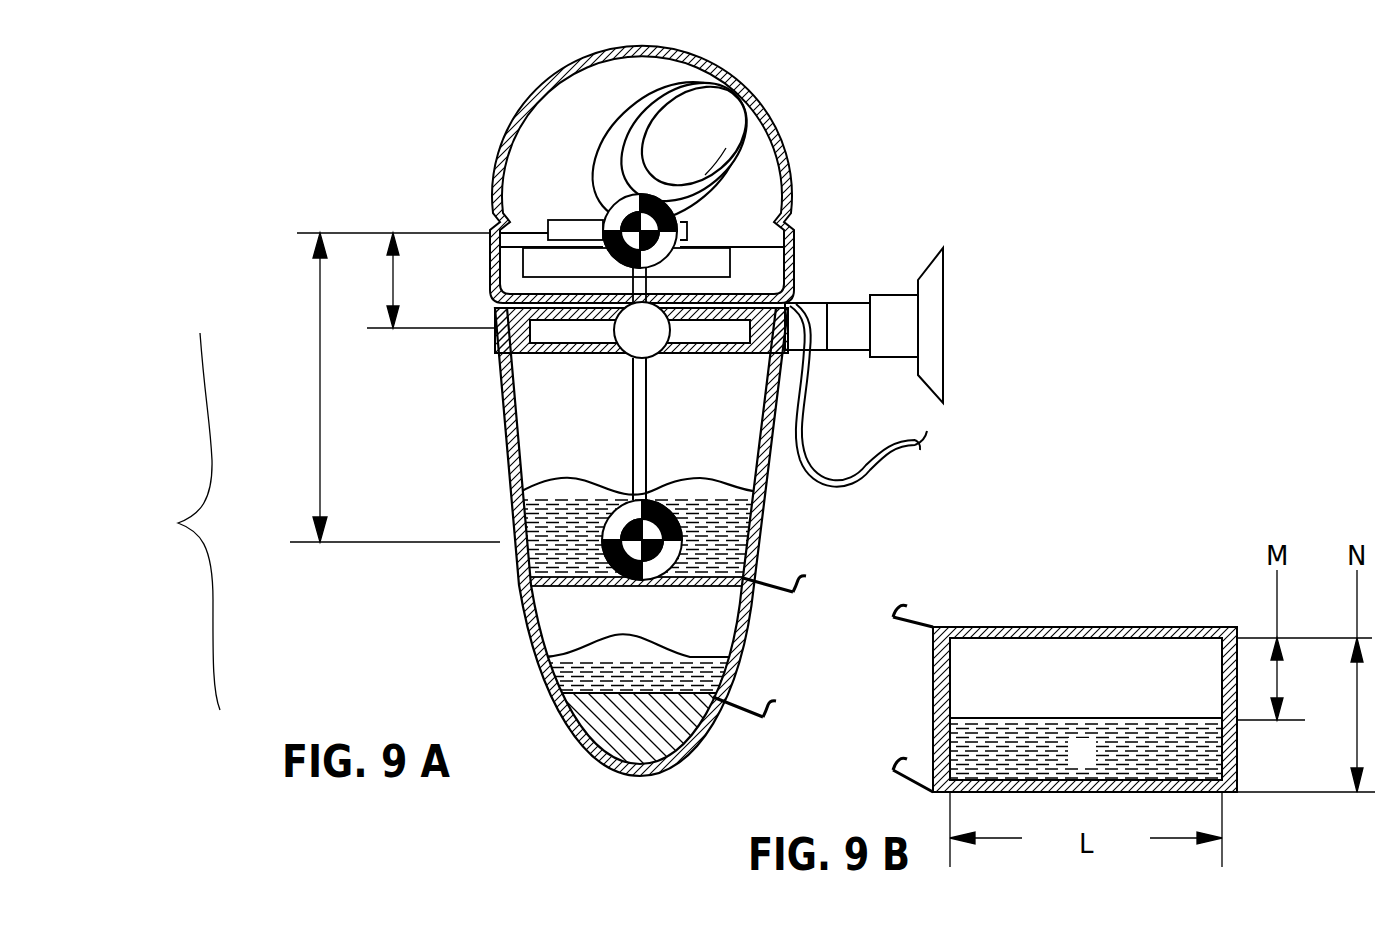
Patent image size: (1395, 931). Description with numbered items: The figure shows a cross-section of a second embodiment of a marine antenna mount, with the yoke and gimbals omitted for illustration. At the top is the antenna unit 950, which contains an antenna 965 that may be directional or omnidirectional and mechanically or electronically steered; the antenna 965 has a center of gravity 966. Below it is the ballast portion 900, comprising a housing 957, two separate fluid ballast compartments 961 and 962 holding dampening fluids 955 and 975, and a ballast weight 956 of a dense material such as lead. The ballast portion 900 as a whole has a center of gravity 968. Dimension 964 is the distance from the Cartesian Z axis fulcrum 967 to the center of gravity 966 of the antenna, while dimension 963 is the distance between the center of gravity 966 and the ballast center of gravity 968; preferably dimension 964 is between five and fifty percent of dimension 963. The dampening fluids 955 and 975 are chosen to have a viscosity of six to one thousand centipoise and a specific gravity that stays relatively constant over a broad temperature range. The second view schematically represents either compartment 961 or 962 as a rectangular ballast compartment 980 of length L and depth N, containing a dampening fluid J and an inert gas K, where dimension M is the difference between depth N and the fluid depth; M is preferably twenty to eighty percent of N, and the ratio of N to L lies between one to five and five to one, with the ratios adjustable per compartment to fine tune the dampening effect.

In FIG. 9A, the ballast portion 900 is at (170, 521).
In FIG. 9A, the antenna unit 950 is at (523, 92).
In FIG. 9A, the dampening fluid 955 is at (543, 503).
In FIG. 9A, the ballast weight 956 is at (668, 733).
In FIG. 9A, the housing 957 is at (773, 507).
In FIG. 9A, the ballast compartment 961 is at (738, 429).
In FIG. 9A, the ballast compartment 962 is at (712, 622).
In FIG. 9A, the dimension 963 is at (320, 338).
In FIG. 9A, the dimension 964 is at (393, 268).
In FIG. 9A, the antenna 965 is at (745, 140).
In FIG. 9A, the center of gravity 966 is at (679, 236).
In FIG. 9A, the Cartesian Z axis fulcrum 967 is at (707, 297).
In FIG. 9A, the center of gravity 968 is at (683, 548).
In FIG. 9A, the dampening fluid 975 is at (573, 657).
In FIG. 9B, the ballast compartment 980 is at (1015, 622).